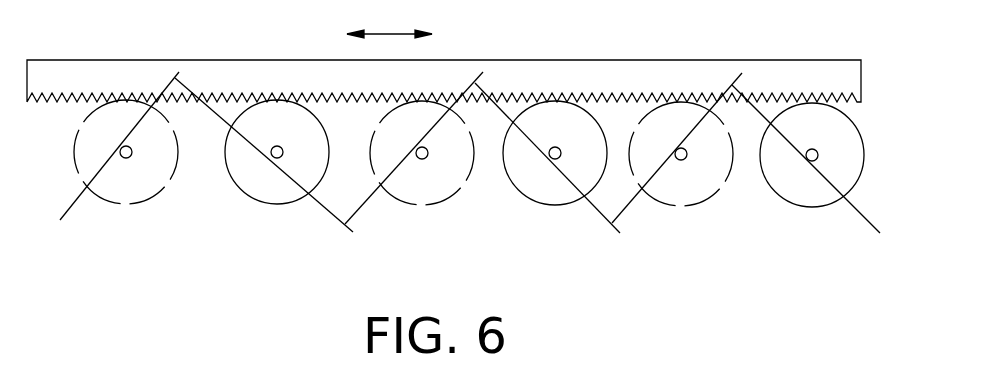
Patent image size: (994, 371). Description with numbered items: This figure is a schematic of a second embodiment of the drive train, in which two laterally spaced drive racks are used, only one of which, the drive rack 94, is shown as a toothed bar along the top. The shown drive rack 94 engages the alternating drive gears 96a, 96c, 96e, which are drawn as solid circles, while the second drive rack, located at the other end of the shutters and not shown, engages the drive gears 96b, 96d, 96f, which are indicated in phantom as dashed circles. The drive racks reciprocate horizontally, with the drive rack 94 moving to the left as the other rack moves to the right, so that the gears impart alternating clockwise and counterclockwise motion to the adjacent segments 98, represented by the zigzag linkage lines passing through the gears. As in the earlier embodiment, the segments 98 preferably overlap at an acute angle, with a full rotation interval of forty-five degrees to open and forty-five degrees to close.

The drive rack 94 is at (617, 60).
The segments 98 is at (190, 92).
The drive gear 96a is at (812, 207).
The drive gear 96b is at (682, 205).
The drive gear 96c is at (537, 205).
The drive gear 96d is at (408, 204).
The drive gear 96e is at (272, 205).
The drive gear 96f is at (135, 203).